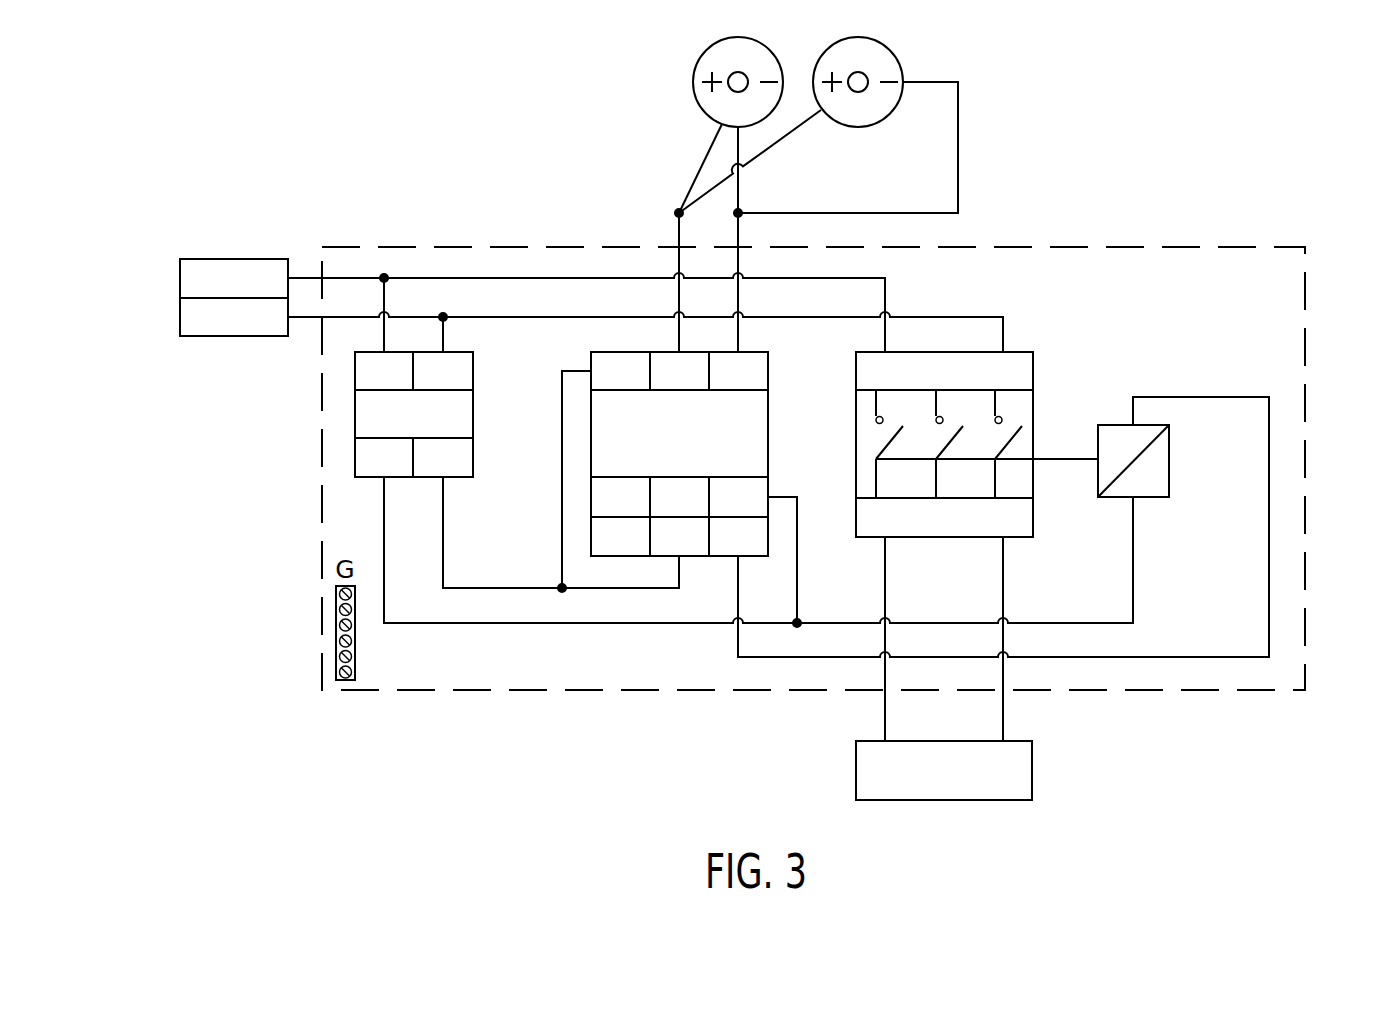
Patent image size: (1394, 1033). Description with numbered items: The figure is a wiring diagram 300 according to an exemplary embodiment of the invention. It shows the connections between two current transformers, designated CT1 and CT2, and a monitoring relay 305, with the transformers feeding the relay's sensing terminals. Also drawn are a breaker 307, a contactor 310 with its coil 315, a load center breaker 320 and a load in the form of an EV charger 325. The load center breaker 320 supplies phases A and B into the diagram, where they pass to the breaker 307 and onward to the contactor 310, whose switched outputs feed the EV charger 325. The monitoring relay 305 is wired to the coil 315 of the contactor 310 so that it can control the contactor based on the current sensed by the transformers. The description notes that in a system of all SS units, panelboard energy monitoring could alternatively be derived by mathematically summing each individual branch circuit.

The wiring diagram 300 is at (1262, 105).
The monitoring relay 305 is at (770, 401).
The breaker 307 is at (475, 401).
The contactor 310 is at (1035, 400).
The coil 315 is at (1171, 461).
The load center breaker 320 is at (180, 280).
The EV charger 325 is at (1034, 771).